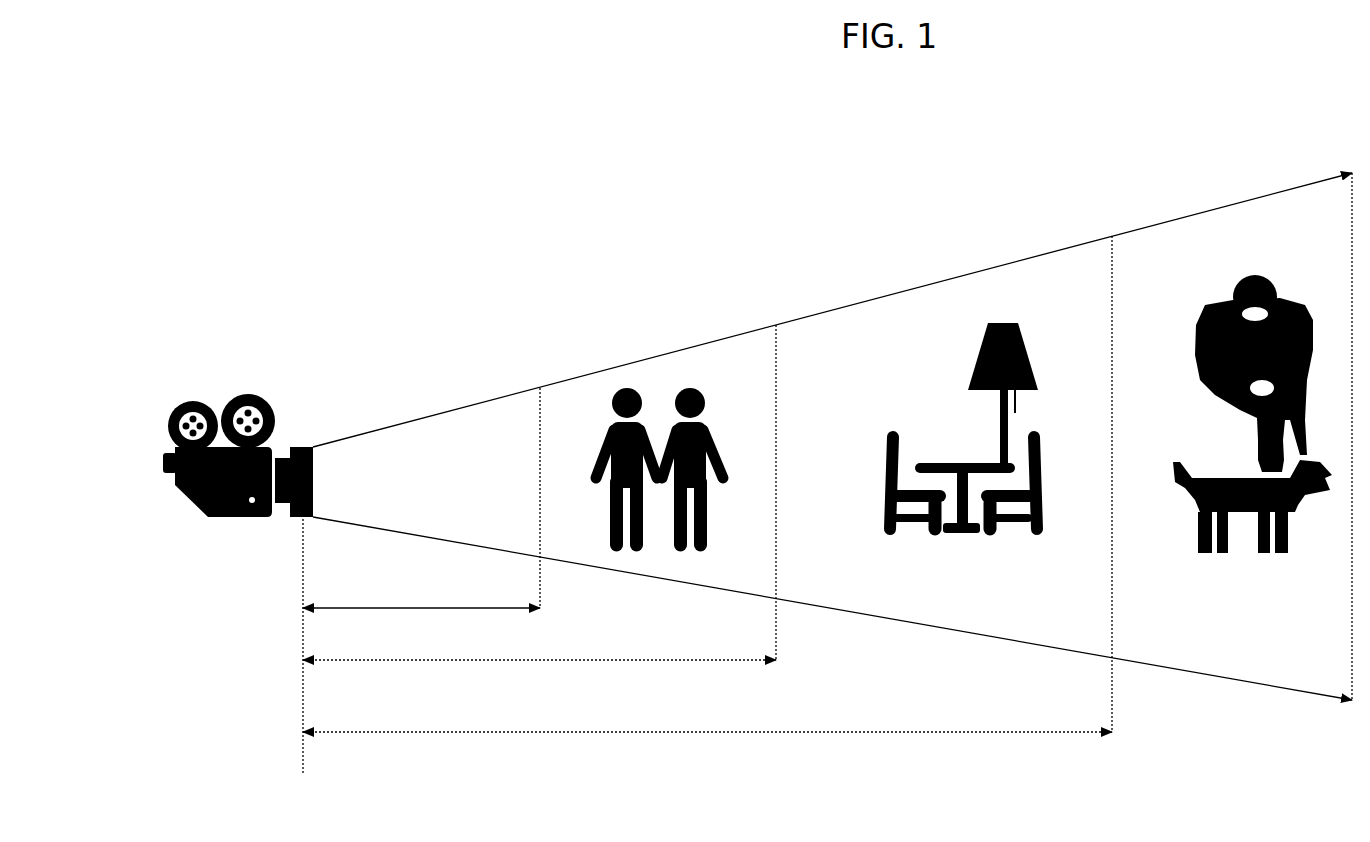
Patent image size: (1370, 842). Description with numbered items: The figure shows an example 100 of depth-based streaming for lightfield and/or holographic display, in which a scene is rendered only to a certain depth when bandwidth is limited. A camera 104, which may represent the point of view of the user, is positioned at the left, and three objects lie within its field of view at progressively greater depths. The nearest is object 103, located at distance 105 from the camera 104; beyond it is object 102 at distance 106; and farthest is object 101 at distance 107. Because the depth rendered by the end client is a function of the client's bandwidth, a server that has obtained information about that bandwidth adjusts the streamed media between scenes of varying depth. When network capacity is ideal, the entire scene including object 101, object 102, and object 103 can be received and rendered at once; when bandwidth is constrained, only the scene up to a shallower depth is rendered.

The example of depth based streaming 100 is at (189, 116).
The object 101 is at (1200, 312).
The object 102 is at (972, 372).
The object 103 is at (705, 409).
The camera 104 is at (190, 402).
The distance 105 is at (408, 605).
The distance 106 is at (635, 658).
The distance 107 is at (905, 728).